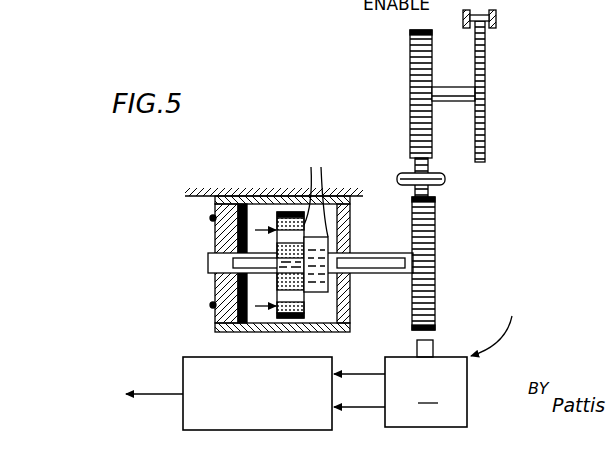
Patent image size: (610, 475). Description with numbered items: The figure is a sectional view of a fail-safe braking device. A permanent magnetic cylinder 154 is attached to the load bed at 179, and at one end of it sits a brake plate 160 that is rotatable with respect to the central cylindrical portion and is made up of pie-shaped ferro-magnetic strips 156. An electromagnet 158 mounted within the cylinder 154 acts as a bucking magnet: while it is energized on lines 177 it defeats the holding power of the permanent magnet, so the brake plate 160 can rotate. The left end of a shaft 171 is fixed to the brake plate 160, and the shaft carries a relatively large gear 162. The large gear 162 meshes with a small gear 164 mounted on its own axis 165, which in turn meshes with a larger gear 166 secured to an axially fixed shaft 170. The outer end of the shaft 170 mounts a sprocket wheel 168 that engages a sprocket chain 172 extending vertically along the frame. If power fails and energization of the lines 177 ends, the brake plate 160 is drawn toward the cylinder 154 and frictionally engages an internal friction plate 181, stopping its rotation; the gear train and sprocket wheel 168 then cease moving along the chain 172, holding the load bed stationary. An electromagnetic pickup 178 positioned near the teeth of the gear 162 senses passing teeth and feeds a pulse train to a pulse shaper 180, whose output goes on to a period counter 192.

The permanent magnetic cylinder 154 is at (280, 157).
The pie-shaped ferro-magnetic strips 156 is at (313, 220).
The electromagnet 158 is at (215, 316).
The brake plate 160 is at (274, 213).
The large gear 162 is at (436, 229).
The small gear 164 is at (428, 168).
The axis 165 is at (446, 177).
The gear 166 is at (409, 66).
The sprocket wheel 168 is at (486, 123).
The axially fixed shaft 170 is at (457, 92).
The shaft 171 is at (382, 253).
The sprocket chain 172 is at (497, 18).
The lines 177 is at (211, 218).
The electromagnetic pickup 178 is at (454, 336).
The attachment point 179 is at (226, 190).
The pulse shaper 180 is at (258, 430).
The internal friction plate 181 is at (244, 325).
The period counter 192 is at (100, 406).